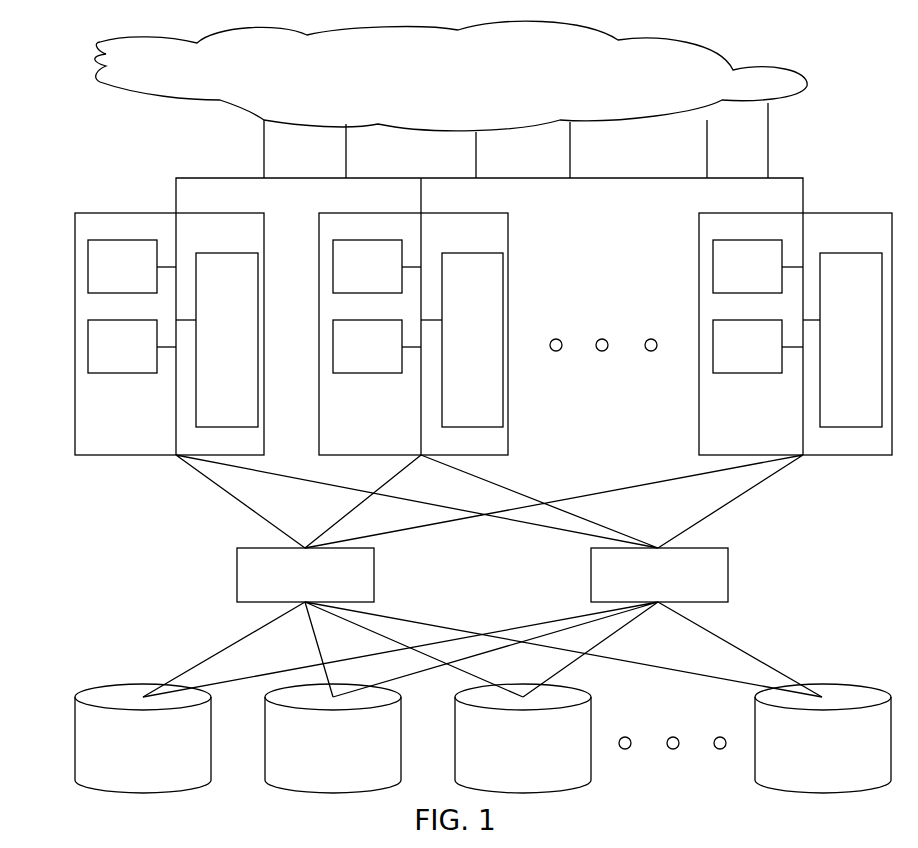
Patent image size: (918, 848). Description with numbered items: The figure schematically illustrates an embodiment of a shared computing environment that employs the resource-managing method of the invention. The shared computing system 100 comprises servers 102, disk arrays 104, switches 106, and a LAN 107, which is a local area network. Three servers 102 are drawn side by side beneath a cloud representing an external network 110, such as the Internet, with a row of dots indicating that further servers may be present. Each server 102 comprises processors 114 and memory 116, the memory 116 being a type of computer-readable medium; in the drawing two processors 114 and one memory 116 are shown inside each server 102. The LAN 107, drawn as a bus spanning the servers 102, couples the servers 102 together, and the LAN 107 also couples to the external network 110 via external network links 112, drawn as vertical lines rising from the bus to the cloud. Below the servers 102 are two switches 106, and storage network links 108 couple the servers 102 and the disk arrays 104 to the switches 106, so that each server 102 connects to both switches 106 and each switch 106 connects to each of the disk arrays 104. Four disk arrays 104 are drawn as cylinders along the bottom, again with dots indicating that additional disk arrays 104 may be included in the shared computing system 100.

The shared computing system 100 is at (102, 124).
The server 102 is at (105, 433).
The disk array 104 is at (126, 761).
The switch 106 is at (288, 584).
The LAN 107 is at (610, 178).
The storage network link 108 is at (237, 500).
The external network 110 is at (433, 86).
The external network link 112 is at (264, 148).
The processor 114 is at (105, 278).
The memory 116 is at (210, 354).